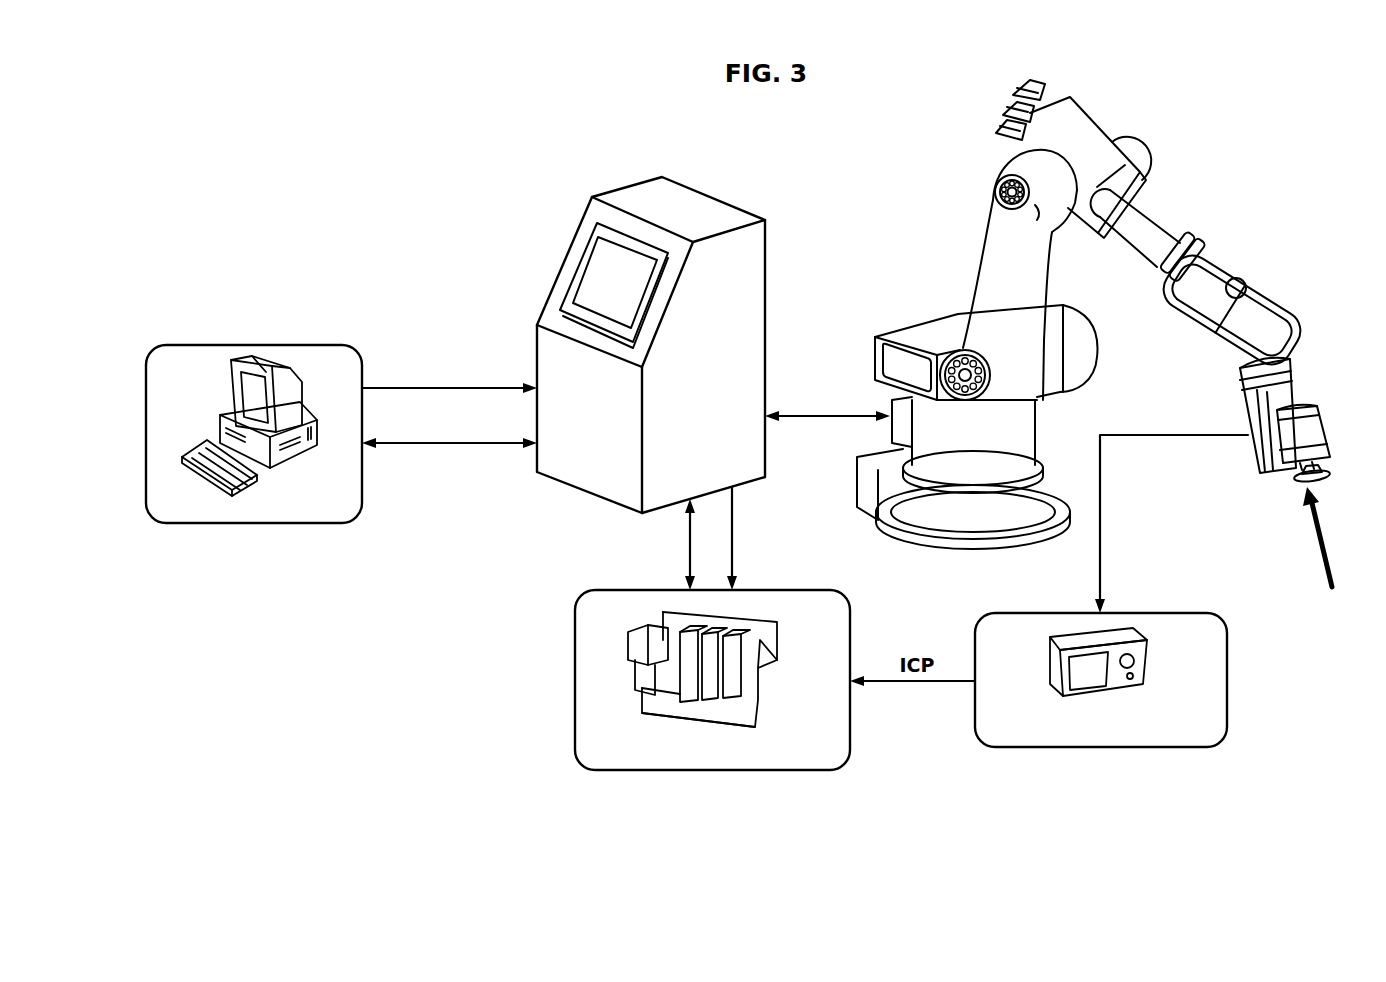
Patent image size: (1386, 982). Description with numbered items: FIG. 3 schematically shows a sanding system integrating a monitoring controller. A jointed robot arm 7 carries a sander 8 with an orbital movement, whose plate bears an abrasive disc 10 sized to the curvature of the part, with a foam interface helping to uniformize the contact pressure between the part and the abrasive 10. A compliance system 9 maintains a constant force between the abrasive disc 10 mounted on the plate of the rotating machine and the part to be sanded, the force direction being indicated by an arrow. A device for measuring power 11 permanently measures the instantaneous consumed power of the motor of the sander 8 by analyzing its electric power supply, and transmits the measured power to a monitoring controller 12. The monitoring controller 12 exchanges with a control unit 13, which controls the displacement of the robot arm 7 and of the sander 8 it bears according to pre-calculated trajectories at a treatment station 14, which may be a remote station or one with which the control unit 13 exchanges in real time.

The robot 7 is at (960, 218).
The spindle 8 is at (1336, 425).
The spindle holder 9 is at (1312, 385).
The tool 10 is at (1282, 492).
The power measurement device 11 is at (1112, 747).
The monitoring controller 12 is at (712, 770).
The robot controller 13 is at (536, 248).
The CAM station 14 is at (250, 523).